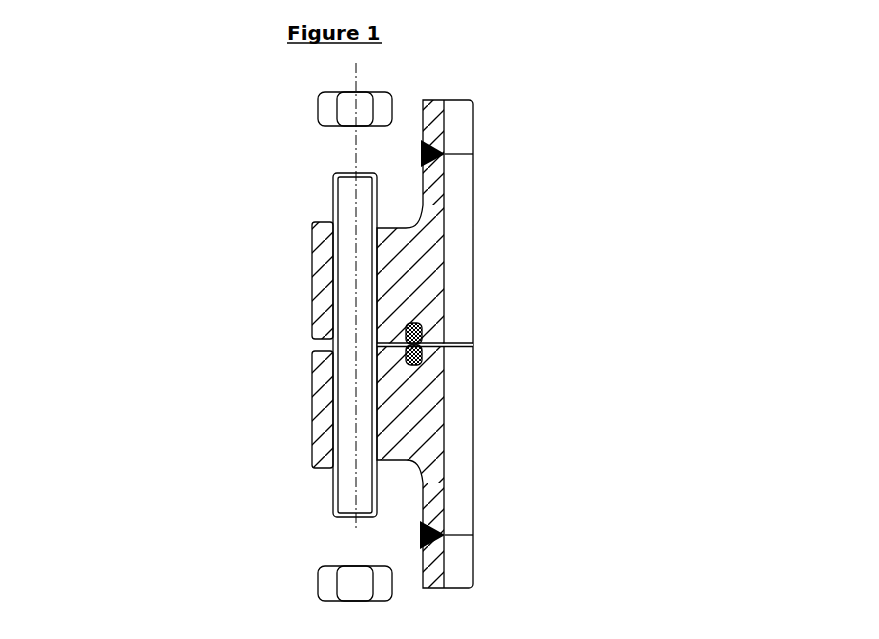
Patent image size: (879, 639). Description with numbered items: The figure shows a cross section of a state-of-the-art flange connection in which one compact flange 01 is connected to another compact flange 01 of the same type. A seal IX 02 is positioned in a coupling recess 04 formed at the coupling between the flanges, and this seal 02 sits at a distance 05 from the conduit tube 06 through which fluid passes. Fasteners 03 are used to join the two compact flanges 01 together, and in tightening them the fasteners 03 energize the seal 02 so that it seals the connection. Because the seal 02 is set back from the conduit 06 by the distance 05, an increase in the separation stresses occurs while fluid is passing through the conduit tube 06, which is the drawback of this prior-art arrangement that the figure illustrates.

The compact flange 01 is at (312, 278).
The seal IX 02 is at (509, 269).
The fastener 03 is at (350, 223).
The coupling recess 04 is at (422, 325).
The distance 05 is at (440, 341).
The conduit tube 06 is at (450, 225).